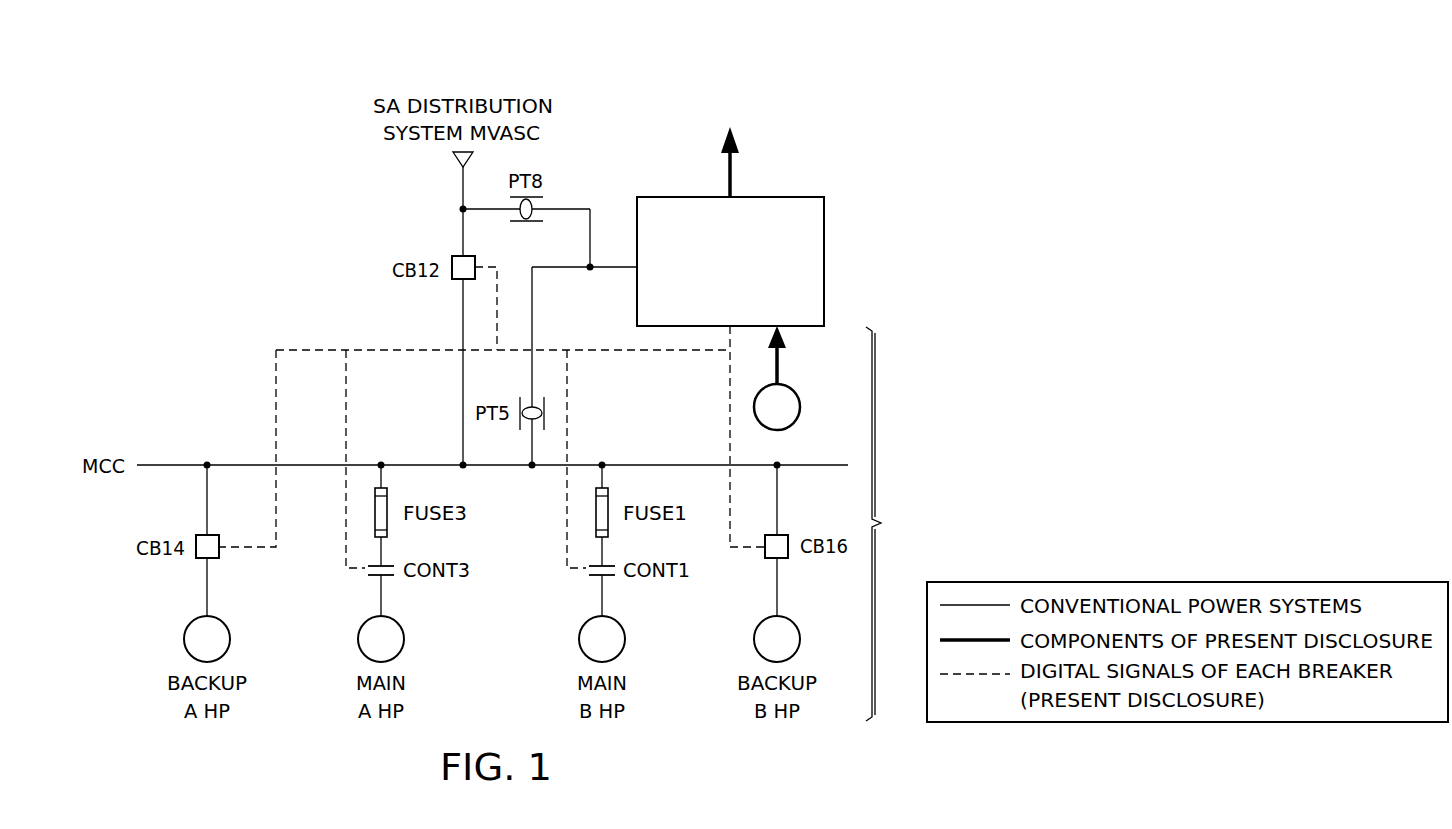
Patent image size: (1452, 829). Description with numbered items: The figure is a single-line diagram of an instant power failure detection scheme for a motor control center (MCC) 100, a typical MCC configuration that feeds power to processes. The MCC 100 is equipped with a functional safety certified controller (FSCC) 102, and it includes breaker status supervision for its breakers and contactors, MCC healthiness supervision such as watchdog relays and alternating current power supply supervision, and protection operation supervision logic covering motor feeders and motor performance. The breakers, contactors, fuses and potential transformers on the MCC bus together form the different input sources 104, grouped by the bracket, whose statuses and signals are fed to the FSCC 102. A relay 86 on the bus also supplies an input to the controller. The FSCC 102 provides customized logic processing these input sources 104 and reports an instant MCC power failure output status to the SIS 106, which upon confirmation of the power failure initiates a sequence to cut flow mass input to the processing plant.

The motor control center 100 is at (1040, 98).
The functional safety certified controller 102 is at (824, 243).
The input sources 104 is at (905, 524).
The SIS 106 is at (783, 93).
The lockout relay 86 is at (777, 378).